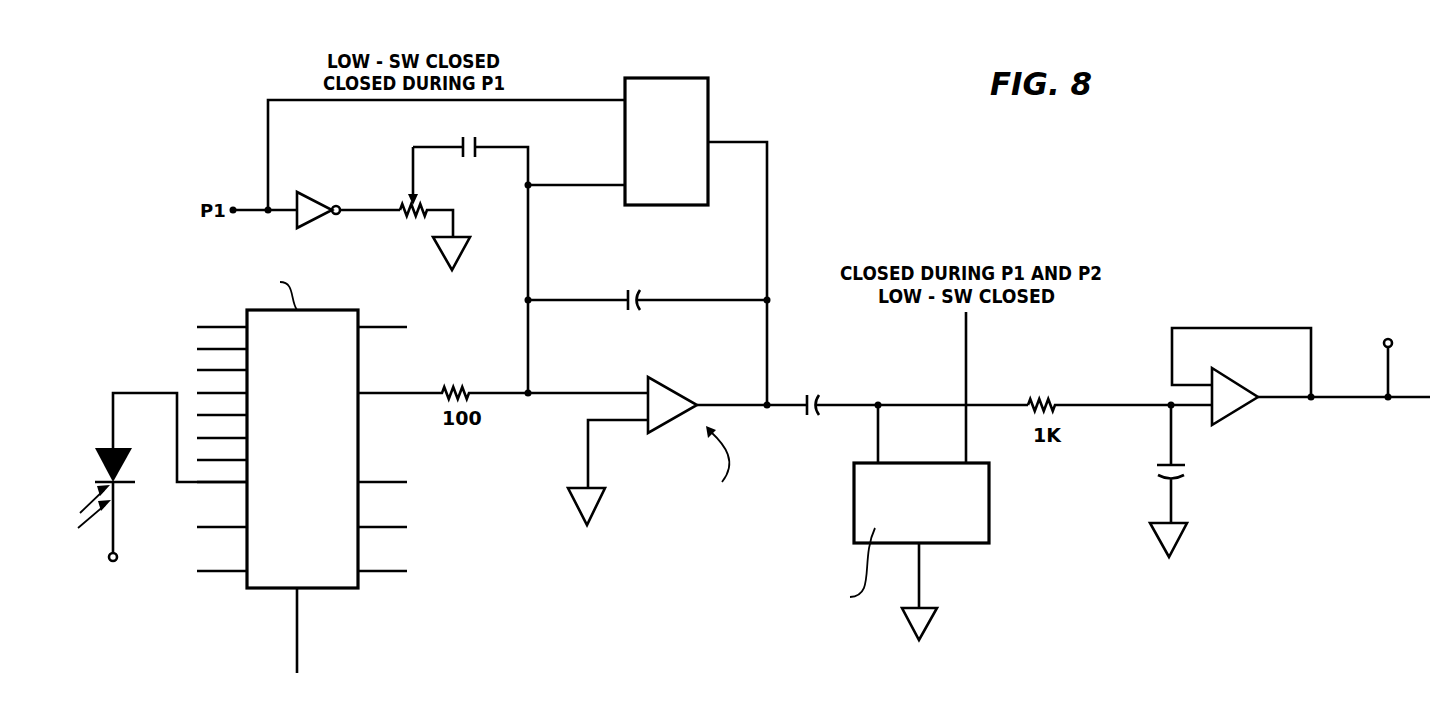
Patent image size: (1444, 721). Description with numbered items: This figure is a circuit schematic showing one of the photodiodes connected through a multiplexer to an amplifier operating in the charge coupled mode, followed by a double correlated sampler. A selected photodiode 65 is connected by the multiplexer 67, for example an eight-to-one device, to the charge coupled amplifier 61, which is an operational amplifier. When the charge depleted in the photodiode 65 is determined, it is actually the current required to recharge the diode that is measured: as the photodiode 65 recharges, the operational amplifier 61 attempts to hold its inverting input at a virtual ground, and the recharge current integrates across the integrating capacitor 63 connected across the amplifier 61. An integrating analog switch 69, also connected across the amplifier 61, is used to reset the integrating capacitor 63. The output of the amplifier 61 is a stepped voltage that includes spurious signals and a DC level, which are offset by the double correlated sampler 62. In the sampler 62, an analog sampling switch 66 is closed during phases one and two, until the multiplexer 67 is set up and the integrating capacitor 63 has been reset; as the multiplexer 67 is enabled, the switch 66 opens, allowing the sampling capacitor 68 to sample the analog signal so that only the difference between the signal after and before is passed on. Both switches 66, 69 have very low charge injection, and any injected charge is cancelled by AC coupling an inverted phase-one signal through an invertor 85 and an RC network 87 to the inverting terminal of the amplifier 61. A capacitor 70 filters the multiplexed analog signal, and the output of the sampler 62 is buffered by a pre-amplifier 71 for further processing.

The charge coupled amplifier 61 is at (680, 418).
The double correlated sampler 62 is at (930, 476).
The integrating capacitor 63 is at (626, 306).
The photodiode 65 is at (108, 450).
The analog sampling switch 66 is at (856, 508).
The multiplexer 67 is at (358, 310).
The sampling capacitor 68 is at (806, 419).
The integrating analog switch 69 is at (708, 98).
The capacitor 70 is at (1158, 476).
The pre-amplifier 71 is at (1225, 371).
The invertor 85 is at (319, 196).
The RC network 87 is at (396, 168).